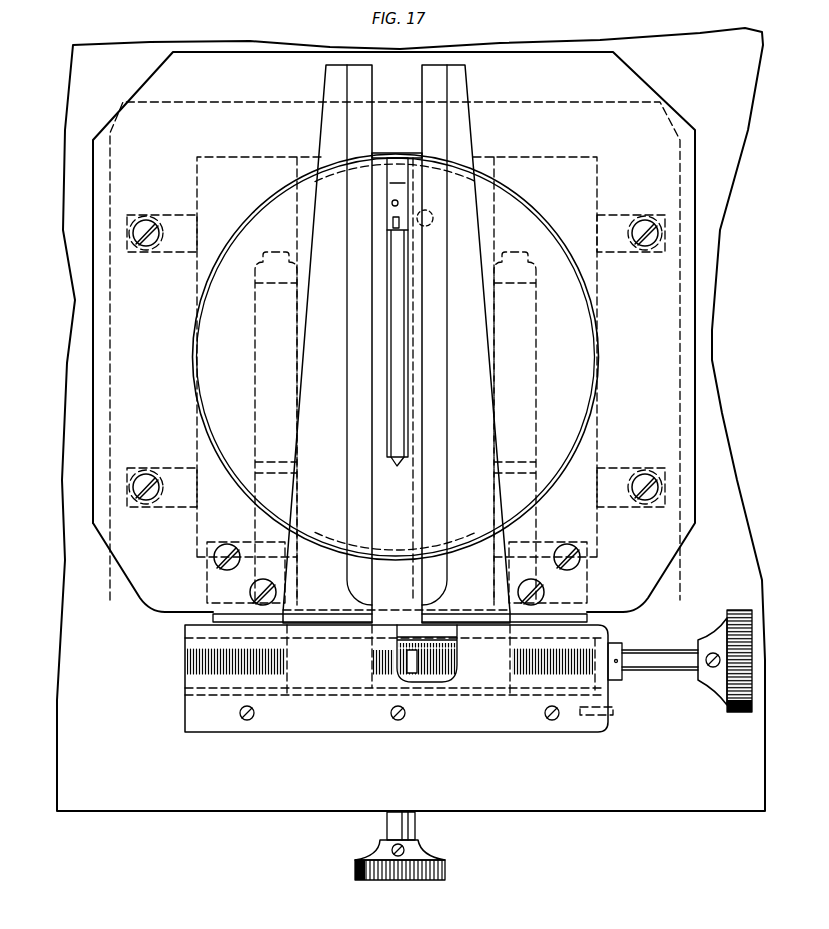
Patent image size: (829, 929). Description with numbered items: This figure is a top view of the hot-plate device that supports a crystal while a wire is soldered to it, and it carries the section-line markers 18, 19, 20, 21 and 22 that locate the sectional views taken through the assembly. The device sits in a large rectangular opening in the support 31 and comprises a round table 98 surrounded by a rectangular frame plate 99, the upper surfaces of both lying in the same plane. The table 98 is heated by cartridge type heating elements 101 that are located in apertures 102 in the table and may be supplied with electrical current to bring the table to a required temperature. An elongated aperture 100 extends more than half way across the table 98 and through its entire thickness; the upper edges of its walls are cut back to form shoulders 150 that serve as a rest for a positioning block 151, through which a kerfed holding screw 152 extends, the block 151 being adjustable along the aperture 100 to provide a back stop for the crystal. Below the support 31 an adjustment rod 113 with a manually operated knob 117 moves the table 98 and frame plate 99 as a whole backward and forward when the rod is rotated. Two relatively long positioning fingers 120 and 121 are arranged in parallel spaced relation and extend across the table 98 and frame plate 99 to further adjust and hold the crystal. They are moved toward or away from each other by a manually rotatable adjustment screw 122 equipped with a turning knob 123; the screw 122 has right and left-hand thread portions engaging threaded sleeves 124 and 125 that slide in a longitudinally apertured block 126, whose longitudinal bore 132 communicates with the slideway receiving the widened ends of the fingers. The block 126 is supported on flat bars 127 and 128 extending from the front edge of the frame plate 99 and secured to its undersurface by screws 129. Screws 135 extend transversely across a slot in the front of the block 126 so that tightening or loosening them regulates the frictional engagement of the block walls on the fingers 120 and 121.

The support 31 is at (169, 813).
The round table 98 is at (213, 379).
The rectangular frame plate 99 is at (102, 518).
The elongated aperture 100 is at (403, 175).
The cartridge type heating elements 101 is at (253, 300).
The apertures 102 is at (274, 215).
The adjustment rod 113 is at (413, 826).
The manually operated knob 117 is at (445, 869).
The positioning finger 120 is at (468, 90).
The positioning finger 121 is at (326, 82).
The adjustment screw 122 is at (653, 673).
The turning knob 123 is at (740, 713).
The threaded sleeve 124 is at (450, 638).
The threaded sleeve 125 is at (352, 670).
The longitudinally apertured block 126 is at (297, 733).
The flat bar 127 is at (600, 616).
The flat bar 128 is at (213, 620).
The screws 129 is at (250, 590).
The longitudinal bore 132 is at (532, 677).
The screws 135 is at (247, 720).
The shoulders 150 is at (398, 158).
The positioning block 151 is at (392, 183).
The holding screw 152 is at (394, 204).
The section line 18 is at (815, 908).
The section line 19 is at (428, 595).
The section line 20 is at (402, 897).
The section line 21 is at (735, 364).
The section line 22 is at (325, 747).